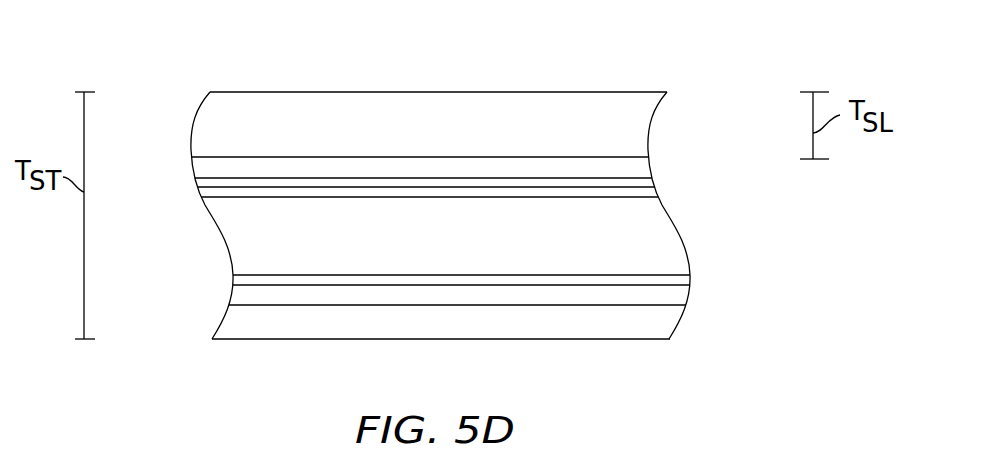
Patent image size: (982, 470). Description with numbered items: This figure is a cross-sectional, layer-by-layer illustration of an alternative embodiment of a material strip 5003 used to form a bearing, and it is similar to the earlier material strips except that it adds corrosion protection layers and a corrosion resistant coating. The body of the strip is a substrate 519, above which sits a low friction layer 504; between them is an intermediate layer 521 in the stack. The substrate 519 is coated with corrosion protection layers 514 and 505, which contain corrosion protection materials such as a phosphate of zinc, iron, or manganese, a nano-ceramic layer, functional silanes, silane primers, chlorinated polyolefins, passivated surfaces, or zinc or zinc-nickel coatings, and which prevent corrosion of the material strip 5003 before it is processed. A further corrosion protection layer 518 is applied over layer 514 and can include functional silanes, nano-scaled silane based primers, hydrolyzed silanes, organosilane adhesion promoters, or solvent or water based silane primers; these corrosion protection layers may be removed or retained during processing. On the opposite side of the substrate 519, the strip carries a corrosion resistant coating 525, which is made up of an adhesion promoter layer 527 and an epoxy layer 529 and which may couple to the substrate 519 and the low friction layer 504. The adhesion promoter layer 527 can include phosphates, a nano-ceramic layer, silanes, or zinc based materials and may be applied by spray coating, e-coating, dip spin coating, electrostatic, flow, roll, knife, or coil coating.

The material strip 5003 is at (770, 52).
The low friction layer 504 is at (193, 128).
The first layer 521 is at (192, 172).
The substrate 519 is at (217, 223).
The corrosion protection layer 518 is at (653, 181).
The corrosion protection layer 514 is at (657, 196).
The corrosion protection layer 505 is at (690, 278).
The adhesion promoter layer 527 is at (231, 291).
The epoxy layer 529 is at (217, 328).
The corrosion resistant coating 525 is at (698, 285).